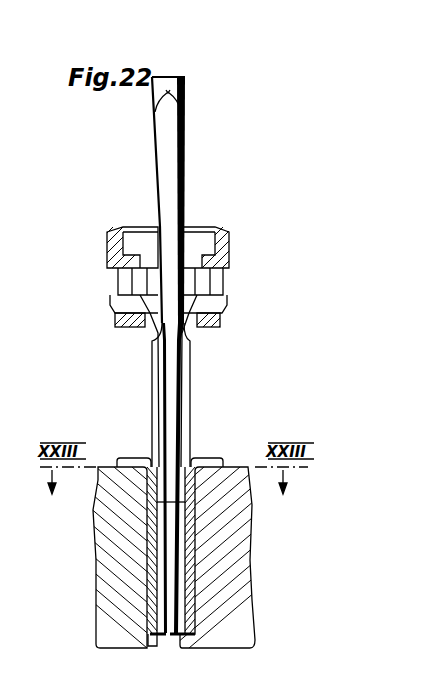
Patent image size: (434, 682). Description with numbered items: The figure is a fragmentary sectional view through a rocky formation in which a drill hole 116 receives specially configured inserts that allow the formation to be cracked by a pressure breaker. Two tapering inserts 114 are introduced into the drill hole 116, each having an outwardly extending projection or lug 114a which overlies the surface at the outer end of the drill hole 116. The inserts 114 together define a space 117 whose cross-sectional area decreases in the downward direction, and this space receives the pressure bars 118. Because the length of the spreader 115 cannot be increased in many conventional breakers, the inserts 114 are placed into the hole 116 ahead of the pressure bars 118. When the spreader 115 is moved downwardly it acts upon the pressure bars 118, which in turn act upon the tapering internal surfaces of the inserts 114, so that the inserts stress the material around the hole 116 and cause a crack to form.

The spreader 115 is at (173, 147).
The pressure bars 118 is at (183, 367).
The projections or lugs 114a is at (136, 458).
The tapering inserts 114 is at (157, 583).
The space 117 is at (168, 527).
The drill hole 116 is at (156, 640).